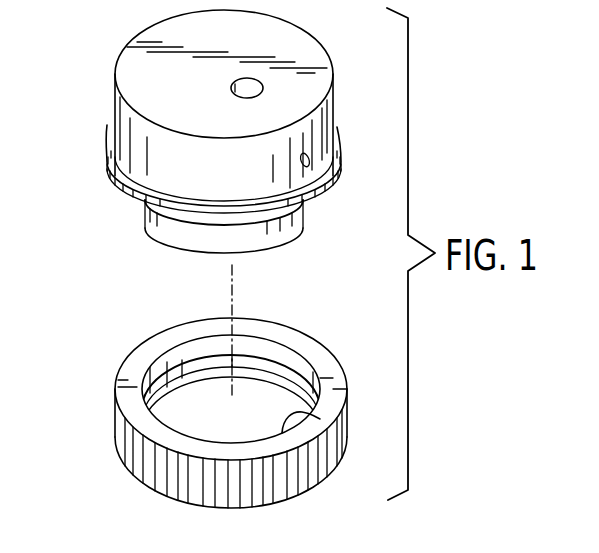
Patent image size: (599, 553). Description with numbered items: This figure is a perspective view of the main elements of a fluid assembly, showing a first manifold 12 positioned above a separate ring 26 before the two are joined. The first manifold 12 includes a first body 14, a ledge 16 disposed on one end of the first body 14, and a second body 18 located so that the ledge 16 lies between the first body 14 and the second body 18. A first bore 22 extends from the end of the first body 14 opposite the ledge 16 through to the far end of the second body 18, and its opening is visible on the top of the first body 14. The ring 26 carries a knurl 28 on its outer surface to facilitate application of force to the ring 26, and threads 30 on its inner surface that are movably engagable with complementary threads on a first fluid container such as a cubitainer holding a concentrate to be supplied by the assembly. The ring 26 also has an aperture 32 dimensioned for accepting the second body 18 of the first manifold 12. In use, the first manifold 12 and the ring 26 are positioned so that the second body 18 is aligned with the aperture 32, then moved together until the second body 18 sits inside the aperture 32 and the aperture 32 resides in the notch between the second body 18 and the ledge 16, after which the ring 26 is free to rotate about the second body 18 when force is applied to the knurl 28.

The first manifold 12 is at (127, 158).
The first body 14 is at (114, 112).
The ledge 16 is at (198, 223).
The second body 18 is at (276, 235).
The first bore 22 is at (263, 88).
The ring 26 is at (122, 471).
The knurl 28 is at (302, 481).
The threads 30 is at (166, 368).
The aperture 32 is at (320, 419).